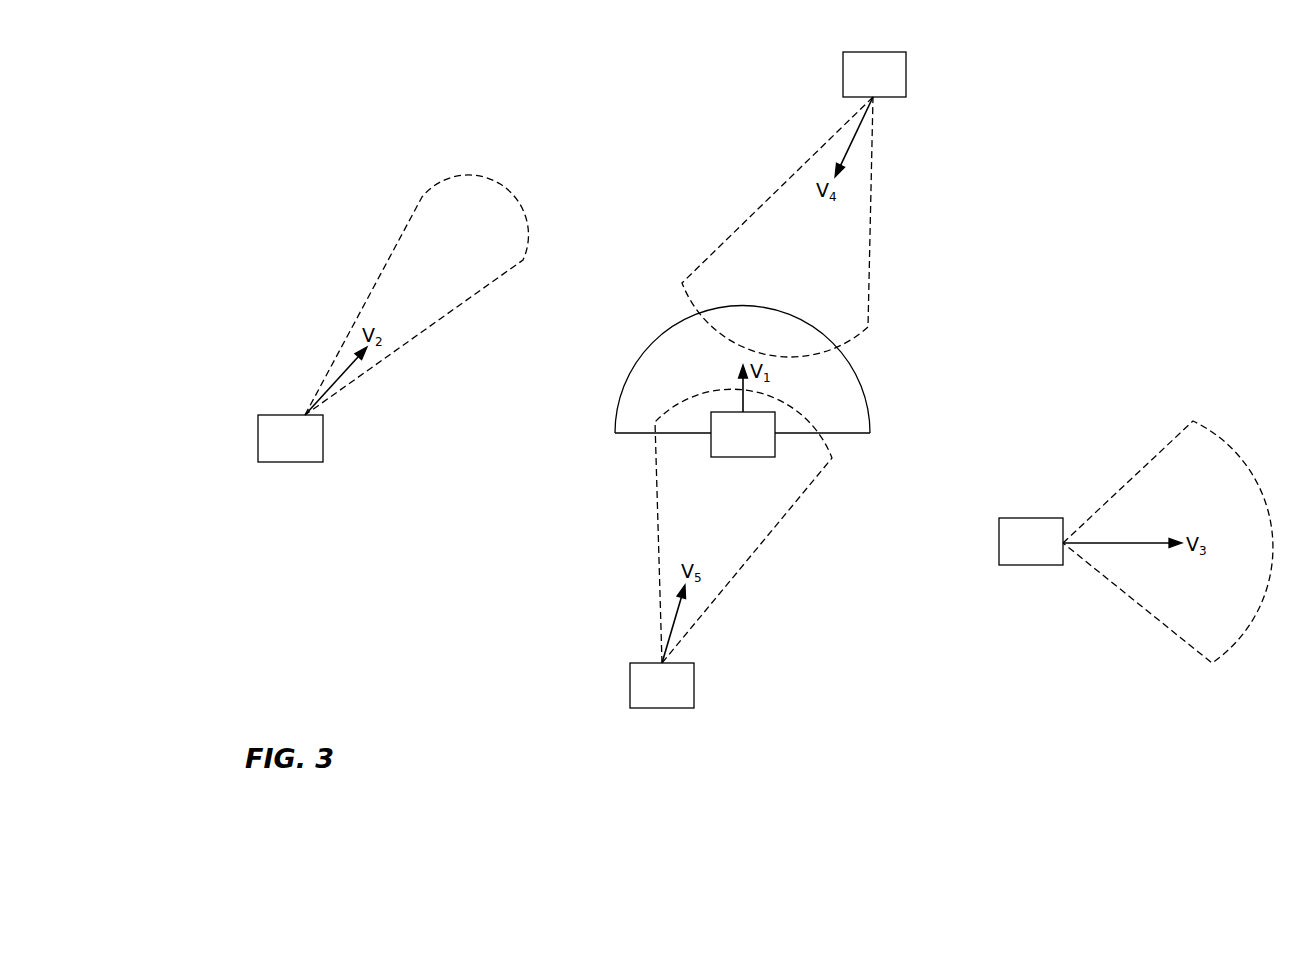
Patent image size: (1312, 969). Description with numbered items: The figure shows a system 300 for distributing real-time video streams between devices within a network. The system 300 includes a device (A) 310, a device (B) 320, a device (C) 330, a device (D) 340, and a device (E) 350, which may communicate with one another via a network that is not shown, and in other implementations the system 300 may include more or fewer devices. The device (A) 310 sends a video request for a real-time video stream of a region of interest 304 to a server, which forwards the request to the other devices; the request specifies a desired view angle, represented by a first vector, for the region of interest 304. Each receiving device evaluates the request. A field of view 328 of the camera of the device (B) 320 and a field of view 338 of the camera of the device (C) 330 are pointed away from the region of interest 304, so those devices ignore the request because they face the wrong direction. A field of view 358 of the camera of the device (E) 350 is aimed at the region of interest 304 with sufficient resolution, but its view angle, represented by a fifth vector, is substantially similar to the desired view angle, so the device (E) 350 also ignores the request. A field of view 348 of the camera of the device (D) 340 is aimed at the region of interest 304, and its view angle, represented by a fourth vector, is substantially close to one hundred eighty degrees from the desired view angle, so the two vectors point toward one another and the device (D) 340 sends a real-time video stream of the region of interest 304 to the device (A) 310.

The system 300 is at (167, 64).
The region of interest 304 is at (862, 433).
The device (A) 310 is at (742, 457).
The device (B) 320 is at (292, 462).
The field of view 328 is at (487, 182).
The device (C) 330 is at (1028, 518).
The field of view 338 is at (1240, 455).
The device (D) 340 is at (878, 52).
The field of view 348 is at (862, 330).
The device (E) 350 is at (665, 708).
The field of view 358 is at (755, 555).